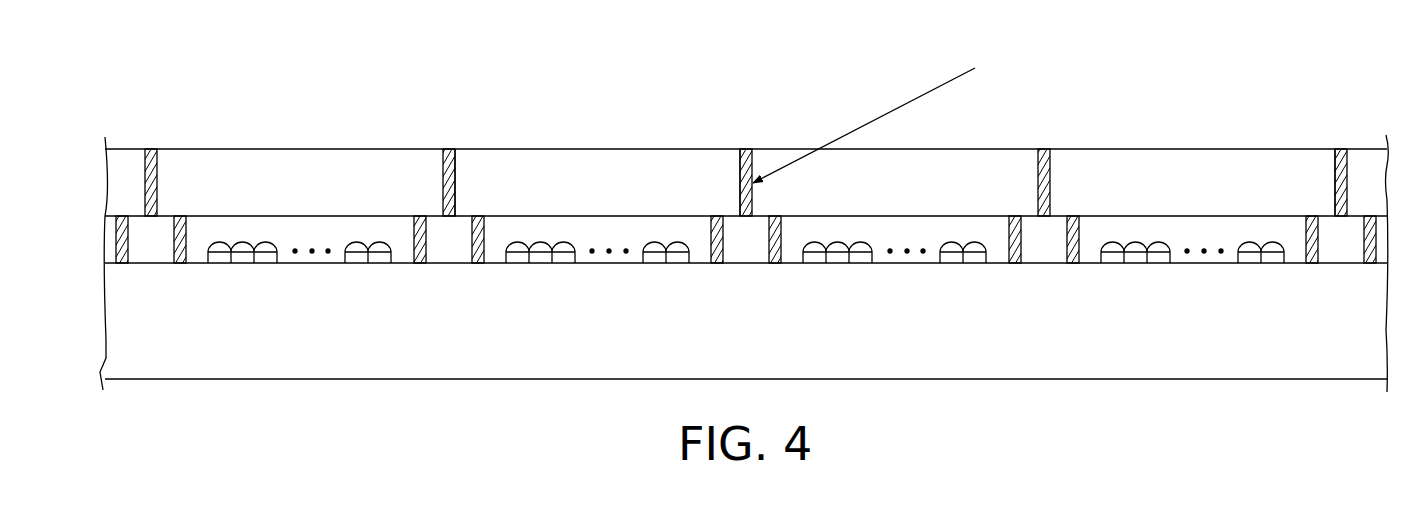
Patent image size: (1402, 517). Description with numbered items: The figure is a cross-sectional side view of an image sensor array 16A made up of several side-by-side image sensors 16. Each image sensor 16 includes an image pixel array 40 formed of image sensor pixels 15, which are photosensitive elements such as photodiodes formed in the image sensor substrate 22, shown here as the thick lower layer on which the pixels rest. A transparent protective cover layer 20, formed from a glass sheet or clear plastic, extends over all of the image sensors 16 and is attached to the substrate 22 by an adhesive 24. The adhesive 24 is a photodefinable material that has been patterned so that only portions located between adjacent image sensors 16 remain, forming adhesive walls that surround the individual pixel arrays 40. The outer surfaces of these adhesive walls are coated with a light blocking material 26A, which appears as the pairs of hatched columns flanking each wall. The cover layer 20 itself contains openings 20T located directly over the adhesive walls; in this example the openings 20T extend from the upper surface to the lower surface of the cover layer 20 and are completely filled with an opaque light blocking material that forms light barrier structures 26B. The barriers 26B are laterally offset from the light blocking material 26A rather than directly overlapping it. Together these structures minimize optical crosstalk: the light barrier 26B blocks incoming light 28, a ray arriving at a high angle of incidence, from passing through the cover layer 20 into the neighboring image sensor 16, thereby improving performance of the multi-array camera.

The image sensor array 16A is at (174, 84).
The image sensor 16 is at (231, 136).
The transparent protective cover layer 20 is at (597, 172).
The openings 20T is at (456, 176).
The light barrier structures 26B is at (158, 174).
The light blocking material 26A is at (715, 266).
The incoming light 28 is at (929, 91).
The image sensor pixels 15 is at (222, 257).
The adhesive 24 is at (446, 264).
The image pixel array 40 is at (202, 297).
The image sensor substrate 22 is at (1123, 353).